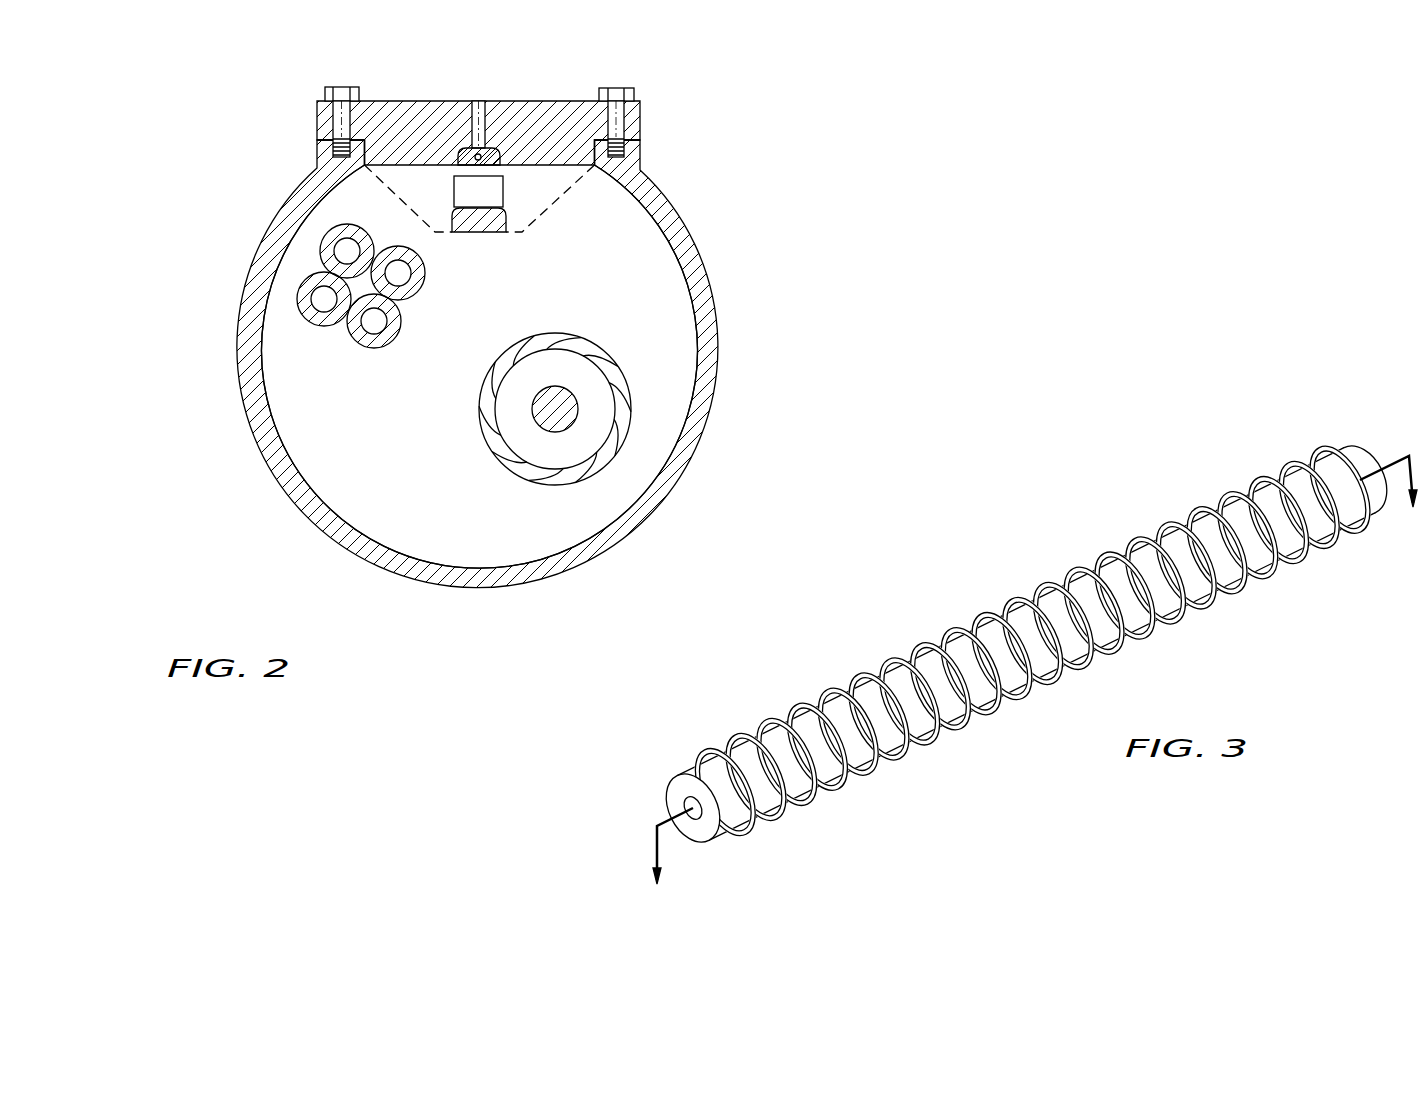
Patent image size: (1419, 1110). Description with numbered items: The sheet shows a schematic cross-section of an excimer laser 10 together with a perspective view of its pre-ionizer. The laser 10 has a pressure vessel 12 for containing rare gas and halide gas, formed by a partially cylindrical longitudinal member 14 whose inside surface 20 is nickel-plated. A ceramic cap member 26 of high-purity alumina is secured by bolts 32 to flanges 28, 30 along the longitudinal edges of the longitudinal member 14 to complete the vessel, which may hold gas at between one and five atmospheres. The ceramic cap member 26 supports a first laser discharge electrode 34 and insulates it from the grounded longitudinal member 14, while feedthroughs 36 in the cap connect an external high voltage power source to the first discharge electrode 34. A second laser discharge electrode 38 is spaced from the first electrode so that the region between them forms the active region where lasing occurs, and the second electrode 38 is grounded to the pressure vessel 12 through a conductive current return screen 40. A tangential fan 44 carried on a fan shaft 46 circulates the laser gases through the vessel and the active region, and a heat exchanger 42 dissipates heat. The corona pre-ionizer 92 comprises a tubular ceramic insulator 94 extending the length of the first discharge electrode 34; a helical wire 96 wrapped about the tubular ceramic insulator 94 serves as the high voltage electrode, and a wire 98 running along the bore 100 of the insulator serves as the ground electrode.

In FIG. 2, the excimer laser 10 is at (414, 305).
In FIG. 2, the pressure vessel 12 is at (448, 314).
In FIG. 2, the partially cylindrical longitudinal member 14 is at (240, 340).
In FIG. 2, the inside surface of longitudinal member 20 is at (296, 462).
In FIG. 2, the ceramic cap member 26 is at (488, 103).
In FIG. 2, the flange 28 is at (317, 150).
In FIG. 2, the flange 30 is at (640, 165).
In FIG. 2, the bolts 32 is at (330, 112).
In FIG. 2, the first laser discharge electrode 34 is at (457, 153).
In FIG. 2, the feedthroughs 36 is at (487, 120).
In FIG. 2, the second laser discharge electrode 38 is at (481, 232).
In FIG. 2, the current return screen 40 is at (566, 190).
In FIG. 2, the heat exchanger 42 is at (306, 322).
In FIG. 2, the tangential fan 44 is at (548, 414).
In FIG. 2, the fan shaft 46 is at (562, 400).
In FIG. 2, the corona pre-ionizer 92 is at (500, 153).
In FIG. 3, the corona pre-ionizer 92 is at (1003, 666).
In FIG. 3, the tubular ceramic insulator 94 is at (735, 815).
In FIG. 3, the helical wire 96 is at (1030, 585).
In FIG. 3, the wire 98 is at (655, 838).
In FIG. 3, the bore 100 is at (683, 796).